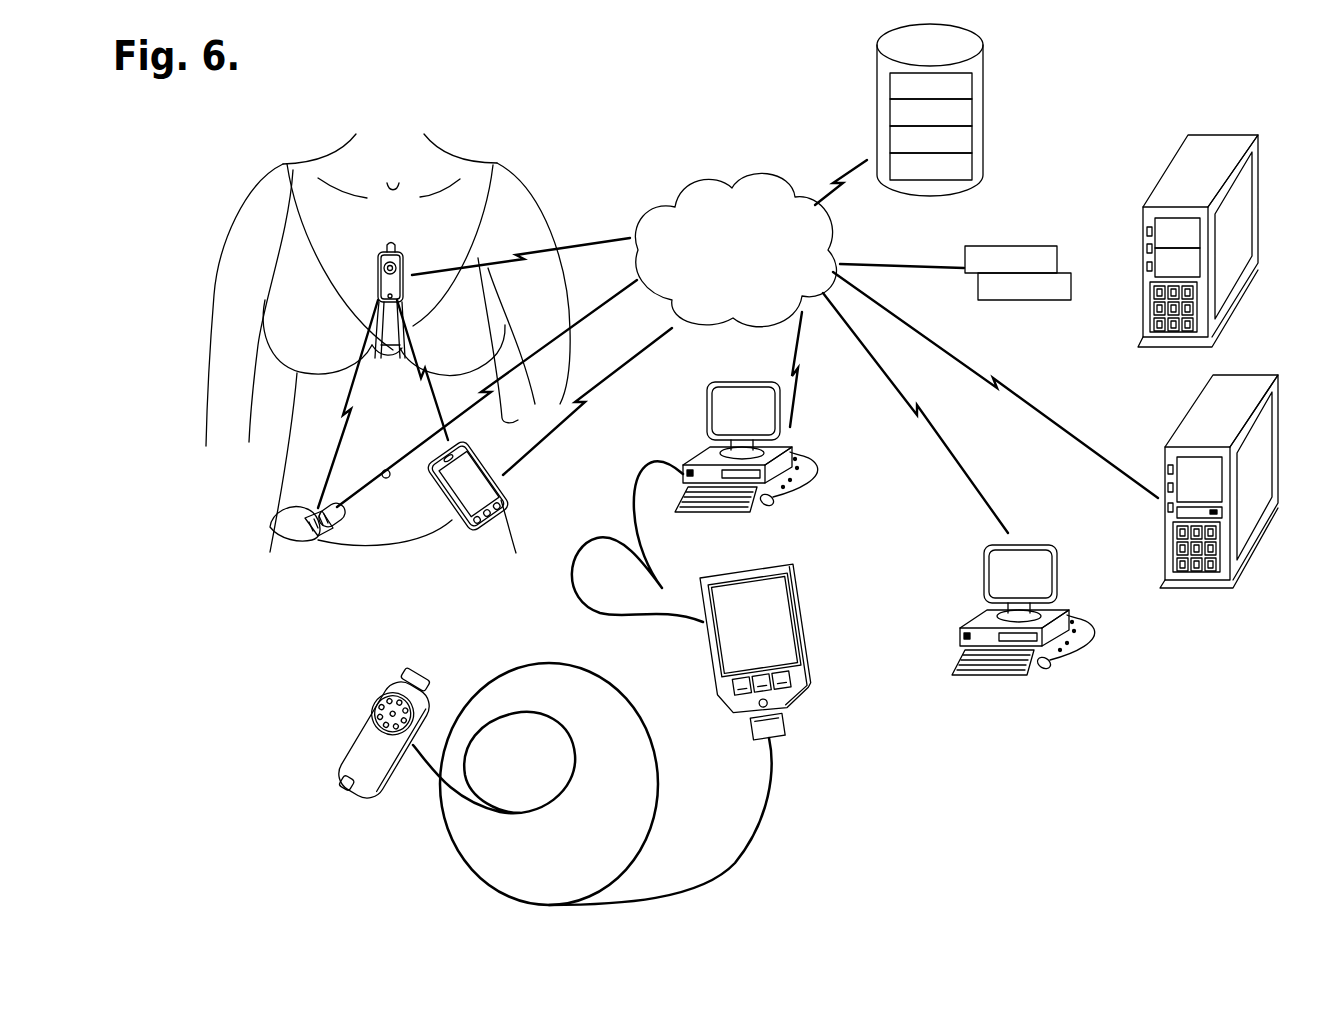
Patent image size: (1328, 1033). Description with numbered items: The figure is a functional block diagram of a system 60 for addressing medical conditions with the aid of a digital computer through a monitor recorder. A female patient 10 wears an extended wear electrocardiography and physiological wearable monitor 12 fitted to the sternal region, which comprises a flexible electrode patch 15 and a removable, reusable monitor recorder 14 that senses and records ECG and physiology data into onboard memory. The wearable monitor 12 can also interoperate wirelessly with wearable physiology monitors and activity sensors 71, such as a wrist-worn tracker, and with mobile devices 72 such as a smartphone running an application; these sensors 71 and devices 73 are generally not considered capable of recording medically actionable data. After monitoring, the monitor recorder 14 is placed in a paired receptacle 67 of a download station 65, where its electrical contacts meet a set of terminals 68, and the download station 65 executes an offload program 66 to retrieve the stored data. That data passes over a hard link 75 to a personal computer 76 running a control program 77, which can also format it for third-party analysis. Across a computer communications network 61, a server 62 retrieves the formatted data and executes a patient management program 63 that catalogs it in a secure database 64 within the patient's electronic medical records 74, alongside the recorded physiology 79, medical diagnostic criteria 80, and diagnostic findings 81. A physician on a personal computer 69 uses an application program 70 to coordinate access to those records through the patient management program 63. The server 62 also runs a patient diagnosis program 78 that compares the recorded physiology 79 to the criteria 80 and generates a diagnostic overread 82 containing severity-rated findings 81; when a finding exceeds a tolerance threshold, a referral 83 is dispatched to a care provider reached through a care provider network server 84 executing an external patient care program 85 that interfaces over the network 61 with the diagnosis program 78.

The system 60 is at (228, 133).
The female patient 10 is at (528, 207).
The wearable monitor 12 is at (407, 246).
The monitor recorder 14 is at (405, 263).
The electrode patch 15 is at (378, 264).
The computer communications network 61 is at (735, 249).
The server 62 is at (1232, 316).
The patient management program 63 is at (1158, 208).
The secure database 64 is at (877, 86).
The download station 65 is at (808, 631).
The offload program 66 is at (770, 606).
The receptacle 67 is at (355, 708).
The terminals 68 is at (387, 694).
The personal computer 69 is at (1018, 545).
The application program 70 is at (1002, 560).
The wearable physiology monitors and activity sensors 71 is at (281, 523).
The mobile devices 72 is at (457, 510).
The devices 73 is at (469, 483).
The electronic medical records 74 is at (983, 81).
The hard link 75 is at (658, 448).
The personal computer 76 is at (707, 405).
The control program 77 is at (735, 393).
The patient diagnosis program 78 is at (1203, 265).
The recorded physiology 79 is at (983, 108).
The medical diagnostic criteria 80 is at (983, 135).
The diagnostic findings 81 is at (983, 161).
The diagnostic overread 82 is at (965, 259).
The referral 83 is at (1072, 285).
The care provider network server 84 is at (1252, 548).
The external application 85 is at (1186, 467).